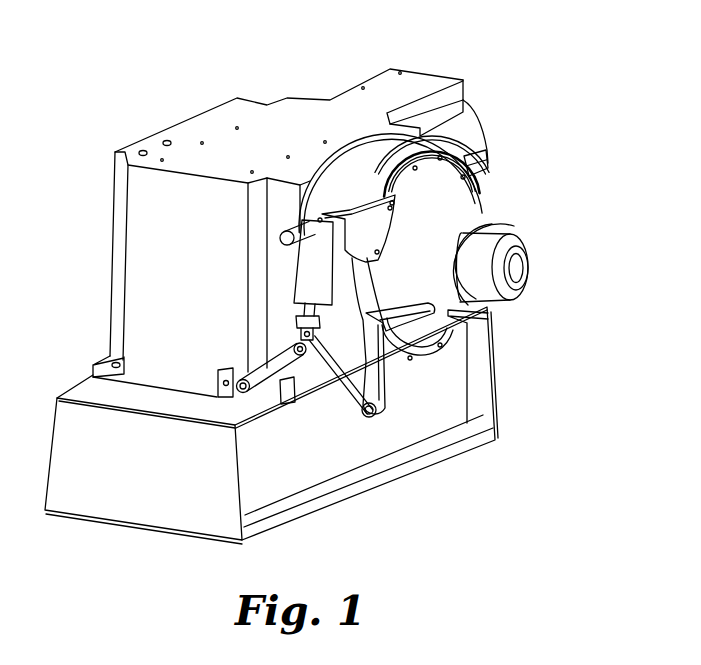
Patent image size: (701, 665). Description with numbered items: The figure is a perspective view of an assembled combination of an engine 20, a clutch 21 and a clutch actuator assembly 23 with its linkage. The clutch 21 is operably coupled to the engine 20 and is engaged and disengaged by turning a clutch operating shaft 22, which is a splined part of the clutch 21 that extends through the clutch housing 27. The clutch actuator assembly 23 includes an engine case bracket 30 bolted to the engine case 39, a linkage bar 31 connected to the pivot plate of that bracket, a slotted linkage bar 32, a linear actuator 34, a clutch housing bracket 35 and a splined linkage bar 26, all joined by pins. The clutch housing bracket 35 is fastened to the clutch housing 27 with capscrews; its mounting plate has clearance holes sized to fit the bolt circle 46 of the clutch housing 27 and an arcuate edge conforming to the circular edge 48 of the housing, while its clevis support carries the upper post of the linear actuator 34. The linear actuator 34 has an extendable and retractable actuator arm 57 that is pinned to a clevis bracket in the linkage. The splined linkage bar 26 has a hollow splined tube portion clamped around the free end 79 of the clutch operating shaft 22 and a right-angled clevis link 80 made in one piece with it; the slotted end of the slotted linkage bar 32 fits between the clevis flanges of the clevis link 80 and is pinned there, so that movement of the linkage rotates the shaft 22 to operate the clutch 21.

The engine 20 is at (151, 200).
The clutch 21 is at (447, 196).
The clutch operating shaft 22 is at (449, 313).
The clutch actuator assembly 23 is at (306, 398).
The splined linkage bar 26 is at (403, 357).
The clutch housing 27 is at (413, 250).
The engine case bracket 30 is at (230, 388).
The linkage bar 31 is at (270, 370).
The slotted linkage bar 32 is at (327, 383).
The linear actuator 34 is at (312, 260).
The clutch housing bracket 35 is at (363, 223).
The engine case 39 is at (232, 363).
The bolt circle 46 is at (432, 148).
The circular edge 48 is at (386, 192).
The actuator arm 57 is at (293, 310).
The end of clutch operating shaft 79 is at (418, 313).
The clevis link 80 is at (378, 420).